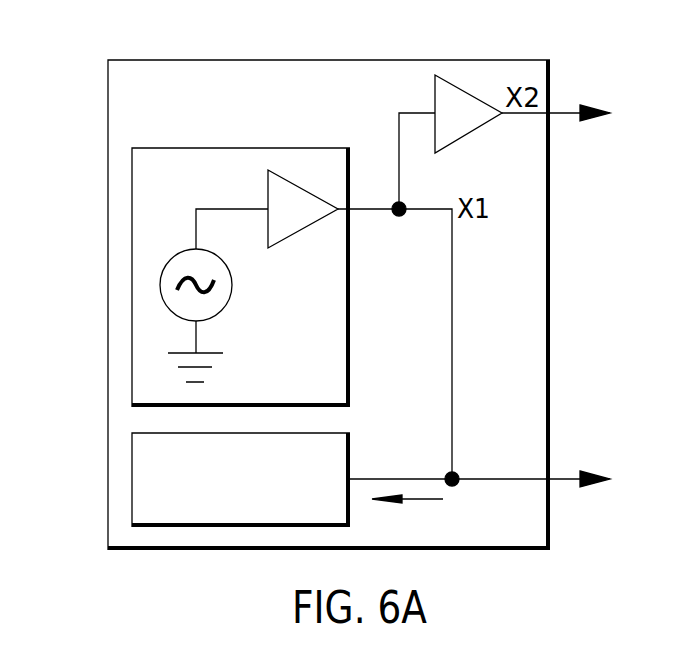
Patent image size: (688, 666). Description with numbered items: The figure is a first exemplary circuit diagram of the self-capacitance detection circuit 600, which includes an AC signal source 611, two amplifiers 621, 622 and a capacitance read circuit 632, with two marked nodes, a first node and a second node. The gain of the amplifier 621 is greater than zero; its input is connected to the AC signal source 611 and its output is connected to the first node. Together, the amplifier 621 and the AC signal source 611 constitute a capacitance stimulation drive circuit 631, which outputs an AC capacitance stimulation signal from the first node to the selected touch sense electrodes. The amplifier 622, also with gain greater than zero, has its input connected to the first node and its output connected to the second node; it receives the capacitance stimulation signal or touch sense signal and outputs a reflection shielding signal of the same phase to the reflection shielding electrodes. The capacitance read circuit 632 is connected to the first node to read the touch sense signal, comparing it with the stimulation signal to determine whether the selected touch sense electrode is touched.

The self-capacitance detection circuit 600 is at (108, 105).
The AC signal source 611 is at (160, 290).
The amplifier 621 is at (290, 180).
The amplifier 622 is at (458, 85).
The capacitance stimulation drive circuit 631 is at (132, 352).
The capacitance read circuit 632 is at (132, 490).